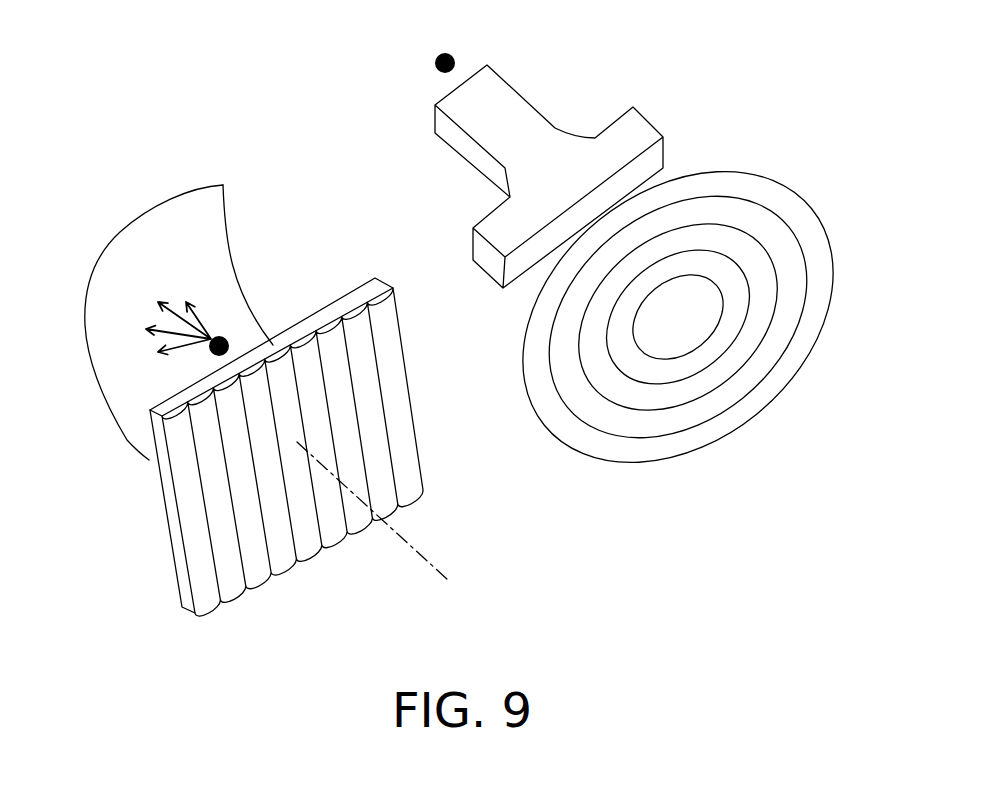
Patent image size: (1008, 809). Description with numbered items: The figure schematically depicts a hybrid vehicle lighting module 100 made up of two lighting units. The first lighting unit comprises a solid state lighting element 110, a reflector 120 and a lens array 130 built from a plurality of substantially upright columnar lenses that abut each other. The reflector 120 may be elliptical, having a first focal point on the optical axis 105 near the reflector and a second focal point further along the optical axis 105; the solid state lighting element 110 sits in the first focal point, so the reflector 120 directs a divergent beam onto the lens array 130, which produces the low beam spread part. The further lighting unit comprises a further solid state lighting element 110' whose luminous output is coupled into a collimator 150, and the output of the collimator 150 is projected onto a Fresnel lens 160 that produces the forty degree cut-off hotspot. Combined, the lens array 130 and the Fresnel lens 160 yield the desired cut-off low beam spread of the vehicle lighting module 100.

The vehicle lighting module 100 is at (142, 100).
The optical axis 105 is at (433, 562).
The solid state lighting element 110 is at (226, 297).
The further solid state lighting element 110' is at (392, 52).
The reflector 120 is at (213, 210).
The lens array 130 is at (178, 533).
The collimator 150 is at (638, 128).
The Fresnel lens 160 is at (757, 402).